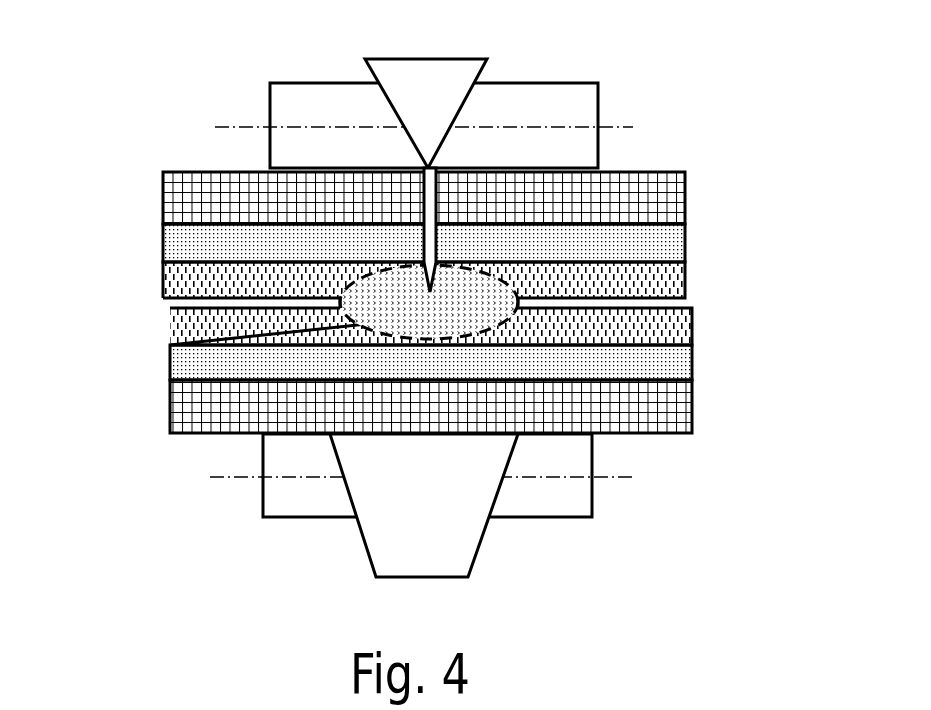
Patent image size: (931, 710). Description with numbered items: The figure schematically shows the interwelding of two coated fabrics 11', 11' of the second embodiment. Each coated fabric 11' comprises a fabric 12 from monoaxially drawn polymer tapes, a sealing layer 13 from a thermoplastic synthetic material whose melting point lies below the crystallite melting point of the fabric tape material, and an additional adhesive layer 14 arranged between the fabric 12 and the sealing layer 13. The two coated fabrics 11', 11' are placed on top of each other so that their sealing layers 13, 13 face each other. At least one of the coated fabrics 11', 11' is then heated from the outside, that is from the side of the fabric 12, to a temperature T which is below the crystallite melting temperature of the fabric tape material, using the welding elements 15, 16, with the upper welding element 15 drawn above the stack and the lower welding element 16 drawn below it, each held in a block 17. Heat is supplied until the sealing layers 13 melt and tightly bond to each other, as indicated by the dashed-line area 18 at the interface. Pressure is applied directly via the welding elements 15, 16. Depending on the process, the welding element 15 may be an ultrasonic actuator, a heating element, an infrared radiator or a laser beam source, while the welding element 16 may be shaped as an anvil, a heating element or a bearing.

The coated fabric 11' is at (417, 302).
The fabric 12 is at (686, 197).
The sealing layer 13 is at (685, 278).
The adhesive layer 14 is at (686, 243).
The welding element 15 is at (470, 59).
The welding element 16 is at (480, 548).
The electrode holder / clamping block 17 is at (600, 105).
The area 18 is at (342, 318).
The temperature T is at (423, 242).